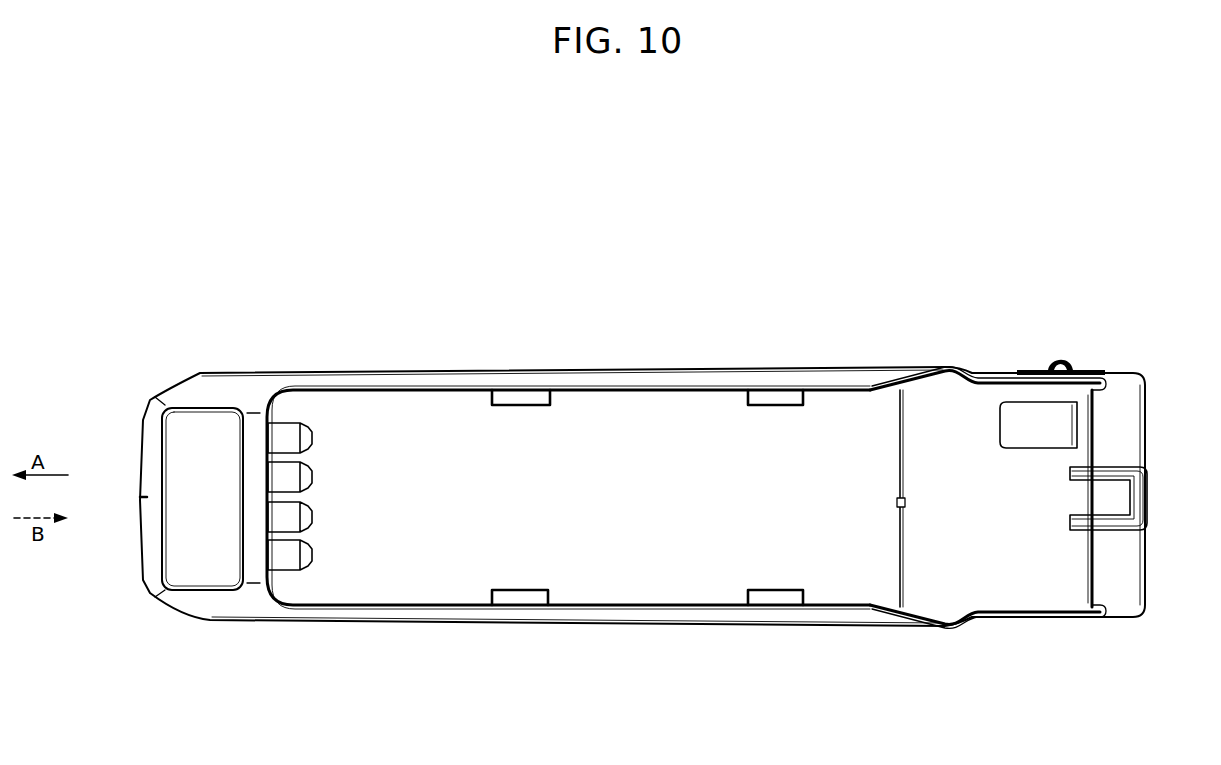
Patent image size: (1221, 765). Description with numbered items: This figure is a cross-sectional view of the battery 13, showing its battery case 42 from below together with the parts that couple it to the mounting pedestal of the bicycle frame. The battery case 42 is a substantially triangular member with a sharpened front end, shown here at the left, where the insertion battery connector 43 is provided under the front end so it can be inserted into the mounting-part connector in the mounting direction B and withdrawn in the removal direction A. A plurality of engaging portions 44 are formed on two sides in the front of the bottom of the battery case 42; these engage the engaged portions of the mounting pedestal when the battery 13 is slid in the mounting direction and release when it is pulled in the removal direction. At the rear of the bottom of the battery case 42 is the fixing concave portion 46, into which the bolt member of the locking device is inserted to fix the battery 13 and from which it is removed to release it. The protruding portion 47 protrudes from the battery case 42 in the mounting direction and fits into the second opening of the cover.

The battery 13 is at (653, 369).
The battery case 42 is at (618, 626).
The battery connector 43 is at (312, 478).
The engaging portions 44 is at (527, 407).
The fixing concave portion 46 is at (1113, 504).
The protruding portion 47 is at (1057, 429).